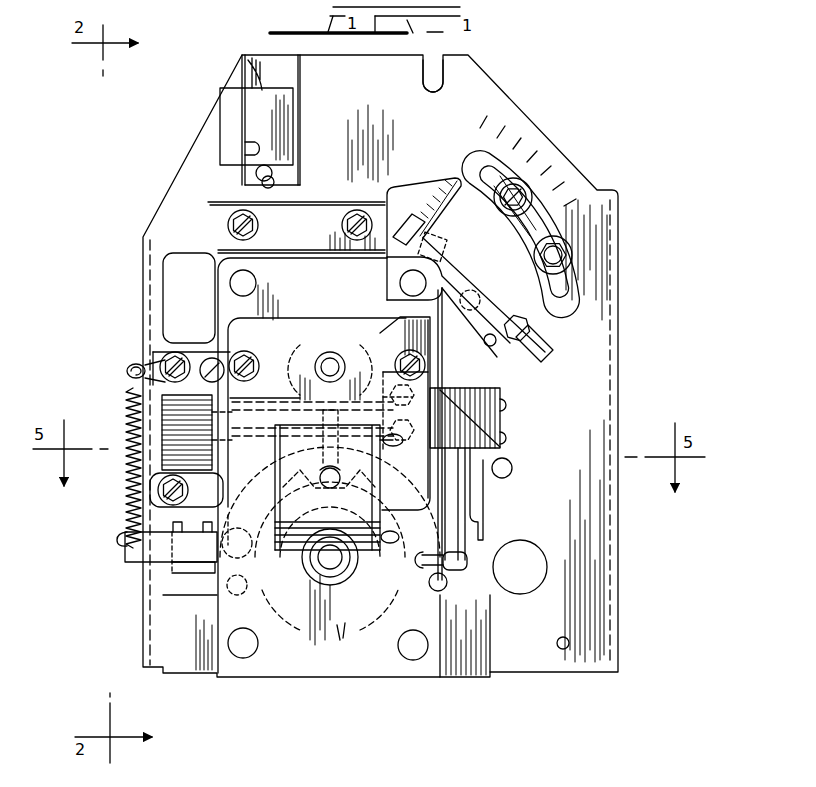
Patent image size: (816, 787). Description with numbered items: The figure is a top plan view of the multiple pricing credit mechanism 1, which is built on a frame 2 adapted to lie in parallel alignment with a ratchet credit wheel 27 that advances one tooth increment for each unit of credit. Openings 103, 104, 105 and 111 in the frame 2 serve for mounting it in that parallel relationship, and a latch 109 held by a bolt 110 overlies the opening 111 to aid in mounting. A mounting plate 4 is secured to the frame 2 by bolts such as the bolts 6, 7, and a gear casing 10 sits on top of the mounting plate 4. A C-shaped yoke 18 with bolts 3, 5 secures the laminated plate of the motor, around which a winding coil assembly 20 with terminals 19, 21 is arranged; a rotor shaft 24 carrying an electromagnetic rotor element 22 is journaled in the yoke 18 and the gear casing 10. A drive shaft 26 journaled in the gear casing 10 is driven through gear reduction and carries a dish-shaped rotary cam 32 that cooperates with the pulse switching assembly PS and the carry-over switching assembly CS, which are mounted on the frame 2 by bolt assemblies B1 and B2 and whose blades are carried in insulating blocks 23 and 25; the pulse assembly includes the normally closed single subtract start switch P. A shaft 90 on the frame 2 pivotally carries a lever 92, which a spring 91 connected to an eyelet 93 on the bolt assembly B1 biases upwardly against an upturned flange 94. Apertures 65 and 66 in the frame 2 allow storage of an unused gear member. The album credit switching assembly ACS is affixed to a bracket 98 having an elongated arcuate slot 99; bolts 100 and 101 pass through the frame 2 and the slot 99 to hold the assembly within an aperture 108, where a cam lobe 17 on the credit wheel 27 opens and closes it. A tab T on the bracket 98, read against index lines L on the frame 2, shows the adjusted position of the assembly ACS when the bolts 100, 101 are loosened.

The multiple pricing credit mechanism 1 is at (628, 196).
The frame 2 is at (597, 553).
The bolt 3 is at (252, 360).
The mounting plate 4 is at (312, 213).
The bolt 5 is at (400, 360).
The bolt 6 is at (478, 261).
The bolt 7 is at (258, 227).
The gear casing 10 is at (285, 275).
The cam lobe 17 is at (428, 242).
The C-shaped yoke 18 is at (275, 343).
The terminal 19 is at (395, 544).
The winding coil assembly 20 is at (352, 470).
The terminal 21 is at (383, 440).
The electromagnetic rotor element 22 is at (330, 358).
The insulating block 23 is at (175, 412).
The rotor shaft 24 is at (330, 367).
The insulating block 25 is at (497, 394).
The drive shaft 26 is at (336, 562).
The ratchet credit wheel 27 is at (462, 275).
The rotary cam 32 is at (344, 645).
The aperture 65 is at (520, 555).
The aperture 66 is at (565, 638).
The shaft 90 is at (227, 583).
The spring 91 is at (128, 484).
The lever 92 is at (128, 547).
The eyelet 93 is at (134, 366).
The upturned flange 94 is at (192, 547).
The bracket 98 is at (437, 198).
The elongated arcuate slot 99 is at (478, 170).
The bolt 100 is at (560, 245).
The bolt 101 is at (530, 200).
The opening 103 is at (421, 80).
The opening 104 is at (270, 183).
The opening 105 is at (518, 472).
The aperture 108 is at (410, 180).
The latch 109 is at (167, 547).
The bolt 110 is at (186, 490).
The opening 111 is at (236, 536).
The single subtract start switch P is at (231, 105).
The index lines L is at (484, 113).
The tab T is at (522, 185).
The bolt assembly B1 is at (195, 360).
The bolt assembly B2 is at (394, 402).
The pulse switching assembly PS is at (178, 445).
The carry-over switching assembly CS is at (493, 508).
The album credit switching assembly ACS is at (484, 312).